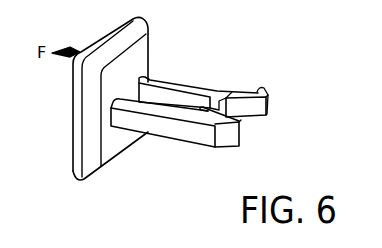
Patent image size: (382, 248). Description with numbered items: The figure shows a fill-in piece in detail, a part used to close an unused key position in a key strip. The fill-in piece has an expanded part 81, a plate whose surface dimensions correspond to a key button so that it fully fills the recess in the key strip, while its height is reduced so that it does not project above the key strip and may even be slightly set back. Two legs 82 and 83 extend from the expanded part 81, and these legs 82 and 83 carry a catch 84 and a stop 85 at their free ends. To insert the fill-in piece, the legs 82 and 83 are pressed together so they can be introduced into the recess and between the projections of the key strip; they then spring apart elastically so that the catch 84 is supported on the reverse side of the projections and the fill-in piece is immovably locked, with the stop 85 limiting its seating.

The expanded part 81 is at (80, 119).
The leg 82 is at (193, 86).
The leg 83 is at (158, 131).
The catch 84 is at (258, 90).
The stop 85 is at (207, 114).